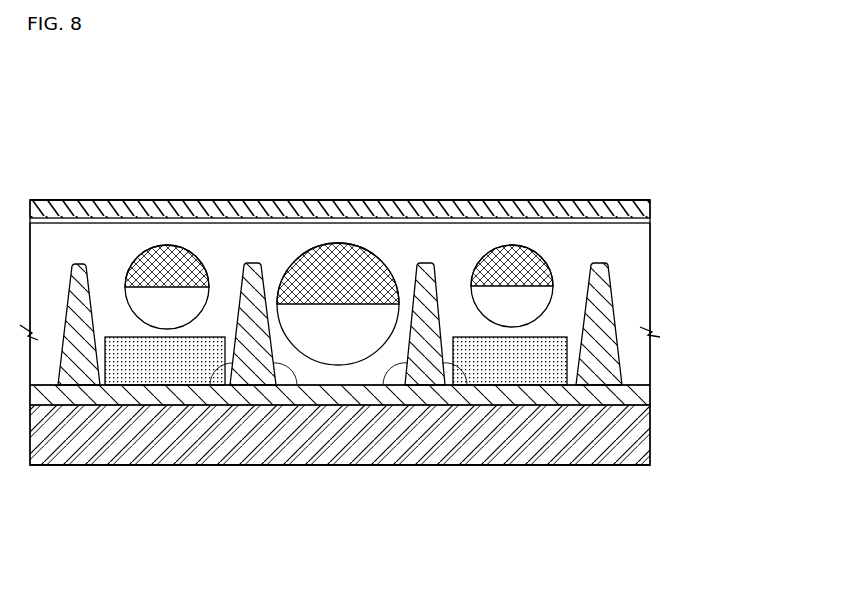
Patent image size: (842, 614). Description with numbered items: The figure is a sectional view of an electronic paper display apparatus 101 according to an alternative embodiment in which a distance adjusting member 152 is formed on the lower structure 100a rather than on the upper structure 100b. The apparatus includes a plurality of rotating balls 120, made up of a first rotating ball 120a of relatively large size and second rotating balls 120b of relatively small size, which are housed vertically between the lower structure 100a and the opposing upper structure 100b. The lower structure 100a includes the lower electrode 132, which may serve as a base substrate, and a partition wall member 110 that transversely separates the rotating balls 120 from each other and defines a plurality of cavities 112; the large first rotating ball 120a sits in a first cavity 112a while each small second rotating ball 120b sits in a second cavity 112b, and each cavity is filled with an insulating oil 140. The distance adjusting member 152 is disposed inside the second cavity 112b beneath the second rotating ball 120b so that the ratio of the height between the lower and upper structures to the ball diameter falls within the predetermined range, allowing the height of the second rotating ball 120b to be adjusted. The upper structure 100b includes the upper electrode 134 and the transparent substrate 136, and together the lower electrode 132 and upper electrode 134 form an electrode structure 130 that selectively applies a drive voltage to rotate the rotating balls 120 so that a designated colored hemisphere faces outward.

The electronic paper display apparatus 101 is at (68, 75).
The lower structure 100a is at (100, 472).
The upper structure 100b is at (89, 198).
The partition wall member 110 is at (515, 393).
The cavities 112 is at (340, 417).
The first cavity 112a is at (268, 374).
The second cavity 112b is at (240, 373).
The rotating balls 120 is at (339, 230).
The first rotating ball 120a is at (338, 254).
The second rotating ball 120b is at (173, 236).
The electrode structure 130 is at (746, 228).
The lower electrode 132 is at (650, 432).
The upper electrode 134 is at (650, 220).
The transparent substrate 136 is at (650, 205).
The insulating oil 140 is at (610, 232).
The distance adjusting member 152 is at (150, 374).